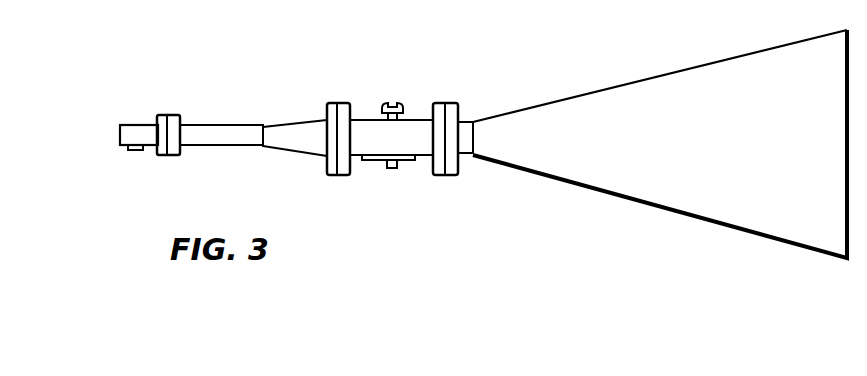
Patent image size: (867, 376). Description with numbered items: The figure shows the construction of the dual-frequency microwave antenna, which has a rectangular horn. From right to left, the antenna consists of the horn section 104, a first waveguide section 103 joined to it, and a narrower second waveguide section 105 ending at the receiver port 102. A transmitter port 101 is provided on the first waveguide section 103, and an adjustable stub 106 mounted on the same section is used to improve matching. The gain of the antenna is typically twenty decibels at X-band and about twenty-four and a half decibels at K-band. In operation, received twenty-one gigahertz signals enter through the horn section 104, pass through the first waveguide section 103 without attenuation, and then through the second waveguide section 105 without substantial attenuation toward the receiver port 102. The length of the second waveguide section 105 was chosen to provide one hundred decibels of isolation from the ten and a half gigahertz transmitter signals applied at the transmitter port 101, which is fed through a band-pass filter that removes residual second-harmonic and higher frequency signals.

The transmitter port 101 is at (393, 171).
The receiver port 102 is at (133, 152).
The first waveguide section 103 is at (362, 123).
The horn section 104 is at (650, 80).
The second waveguide section 105 is at (235, 128).
The adjustable stub 106 is at (398, 110).